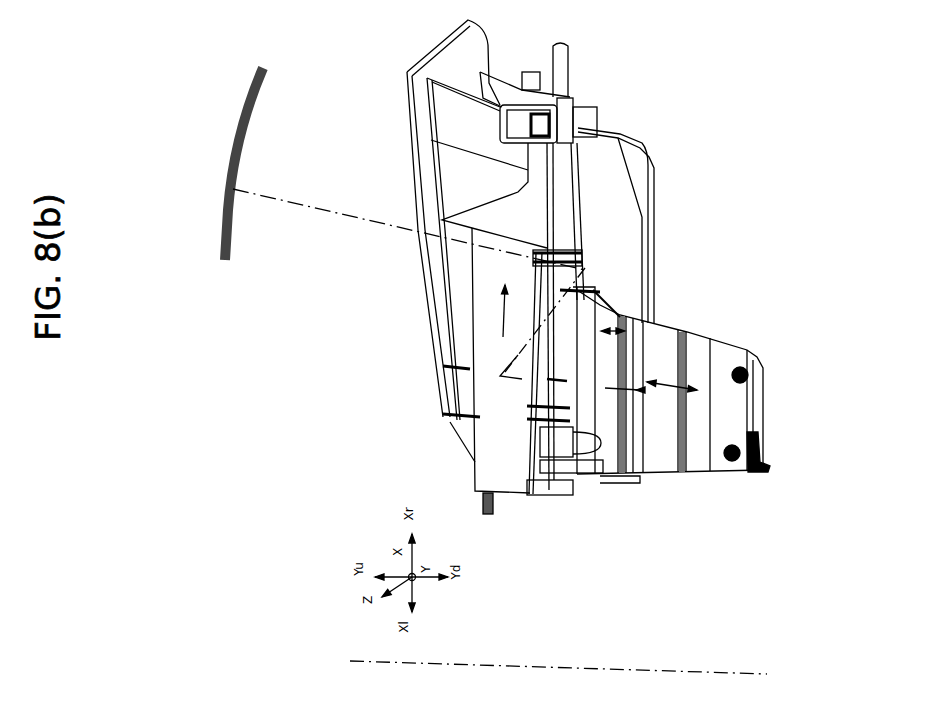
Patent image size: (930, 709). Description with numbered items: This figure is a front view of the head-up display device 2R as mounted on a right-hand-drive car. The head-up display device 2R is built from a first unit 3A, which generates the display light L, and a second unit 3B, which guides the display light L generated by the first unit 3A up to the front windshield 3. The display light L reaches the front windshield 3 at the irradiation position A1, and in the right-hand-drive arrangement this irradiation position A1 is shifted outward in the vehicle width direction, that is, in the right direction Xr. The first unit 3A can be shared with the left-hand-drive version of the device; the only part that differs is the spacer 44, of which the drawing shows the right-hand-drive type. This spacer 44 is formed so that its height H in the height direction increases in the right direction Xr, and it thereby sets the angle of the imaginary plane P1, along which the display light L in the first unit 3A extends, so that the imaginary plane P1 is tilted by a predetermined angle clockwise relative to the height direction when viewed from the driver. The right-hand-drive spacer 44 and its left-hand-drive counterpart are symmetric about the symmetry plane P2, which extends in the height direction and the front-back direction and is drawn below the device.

The head-up display device 2R is at (402, 52).
The front windshield 3 is at (240, 122).
The first unit 3A is at (749, 351).
The second unit 3B is at (657, 260).
The spacer 44 is at (597, 478).
The irradiation position A1 is at (232, 189).
The display light L is at (409, 284).
The height H is at (612, 339).
The imaginary plane P1 is at (622, 375).
The symmetry plane P2 is at (568, 671).
The right direction Xr is at (492, 311).